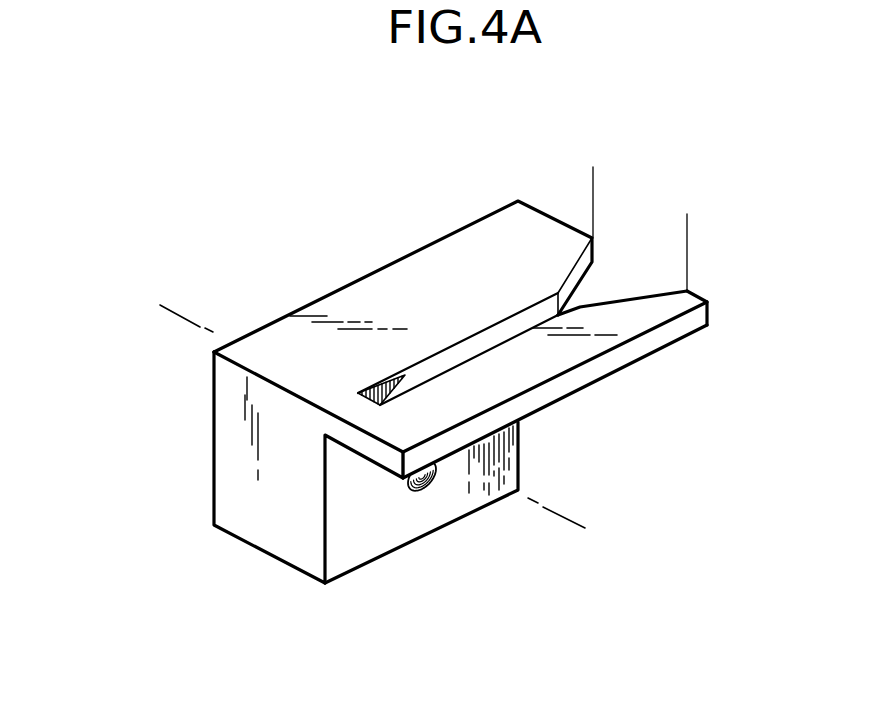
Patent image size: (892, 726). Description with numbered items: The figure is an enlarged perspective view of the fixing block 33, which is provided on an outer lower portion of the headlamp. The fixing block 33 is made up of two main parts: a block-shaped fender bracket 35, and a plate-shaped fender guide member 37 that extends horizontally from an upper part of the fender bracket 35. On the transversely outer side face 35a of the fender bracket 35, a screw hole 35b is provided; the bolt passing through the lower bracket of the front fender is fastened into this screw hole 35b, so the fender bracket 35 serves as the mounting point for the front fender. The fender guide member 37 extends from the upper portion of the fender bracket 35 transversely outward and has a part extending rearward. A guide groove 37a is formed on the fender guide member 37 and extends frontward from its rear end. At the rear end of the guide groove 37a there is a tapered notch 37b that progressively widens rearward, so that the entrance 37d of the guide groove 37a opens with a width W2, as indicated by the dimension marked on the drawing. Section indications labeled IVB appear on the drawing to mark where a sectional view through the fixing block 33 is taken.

The fixing block 33 is at (462, 213).
The fender bracket 35 is at (262, 553).
The transversely outer side face 35a is at (353, 538).
The screw hole 35b is at (437, 485).
The fender guide member 37 is at (640, 364).
The guide groove 37a is at (467, 353).
The tapered notch 37b is at (583, 232).
The entrance 37d is at (645, 290).
The width W2 is at (687, 228).
The section line IVB is at (170, 315).